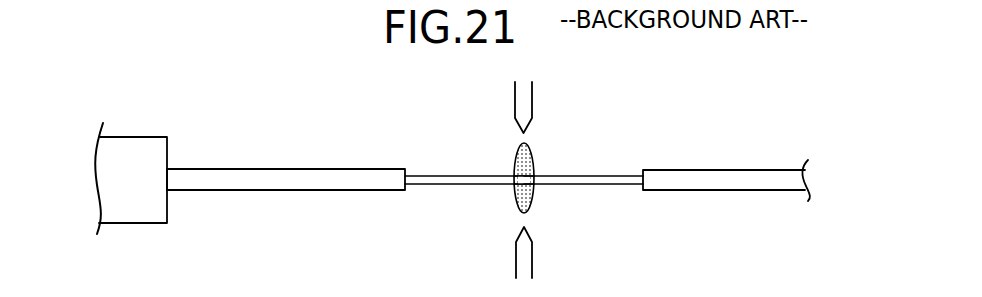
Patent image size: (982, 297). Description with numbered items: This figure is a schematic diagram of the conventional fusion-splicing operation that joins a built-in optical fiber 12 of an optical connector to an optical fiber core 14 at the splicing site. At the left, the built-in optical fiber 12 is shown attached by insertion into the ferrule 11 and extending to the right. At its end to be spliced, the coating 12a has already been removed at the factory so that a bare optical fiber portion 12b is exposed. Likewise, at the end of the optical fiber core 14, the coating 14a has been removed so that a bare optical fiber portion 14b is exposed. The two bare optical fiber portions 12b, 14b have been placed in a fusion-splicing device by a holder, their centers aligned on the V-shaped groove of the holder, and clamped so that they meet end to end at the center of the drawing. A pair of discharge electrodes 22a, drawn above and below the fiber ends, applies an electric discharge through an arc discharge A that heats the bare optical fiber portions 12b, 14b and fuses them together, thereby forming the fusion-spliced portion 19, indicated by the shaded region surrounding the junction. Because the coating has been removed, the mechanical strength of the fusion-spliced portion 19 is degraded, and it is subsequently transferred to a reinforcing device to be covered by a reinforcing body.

The ferrule 11 is at (147, 141).
The built-in optical fiber 12 is at (297, 166).
The coating 12a is at (378, 177).
The bare optical fiber portion 12b is at (470, 175).
The optical fiber core 14 is at (736, 166).
The coating 14a is at (695, 176).
The bare optical fiber portion 14b is at (578, 175).
The fusion-spliced portion 19 is at (533, 180).
The discharge electrodes 22a is at (525, 95).
The arc discharge A is at (517, 200).